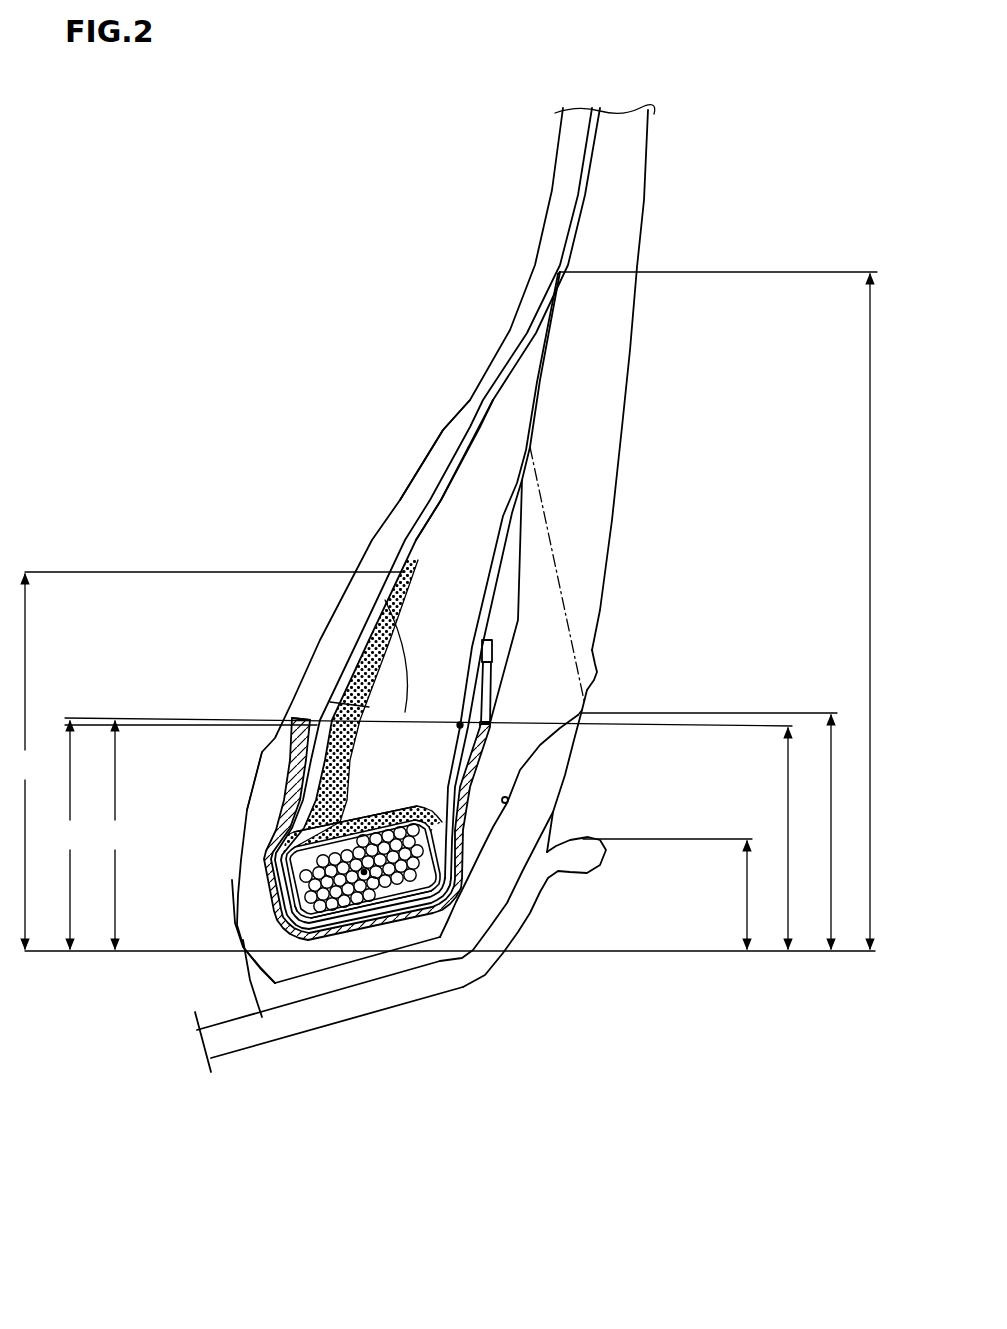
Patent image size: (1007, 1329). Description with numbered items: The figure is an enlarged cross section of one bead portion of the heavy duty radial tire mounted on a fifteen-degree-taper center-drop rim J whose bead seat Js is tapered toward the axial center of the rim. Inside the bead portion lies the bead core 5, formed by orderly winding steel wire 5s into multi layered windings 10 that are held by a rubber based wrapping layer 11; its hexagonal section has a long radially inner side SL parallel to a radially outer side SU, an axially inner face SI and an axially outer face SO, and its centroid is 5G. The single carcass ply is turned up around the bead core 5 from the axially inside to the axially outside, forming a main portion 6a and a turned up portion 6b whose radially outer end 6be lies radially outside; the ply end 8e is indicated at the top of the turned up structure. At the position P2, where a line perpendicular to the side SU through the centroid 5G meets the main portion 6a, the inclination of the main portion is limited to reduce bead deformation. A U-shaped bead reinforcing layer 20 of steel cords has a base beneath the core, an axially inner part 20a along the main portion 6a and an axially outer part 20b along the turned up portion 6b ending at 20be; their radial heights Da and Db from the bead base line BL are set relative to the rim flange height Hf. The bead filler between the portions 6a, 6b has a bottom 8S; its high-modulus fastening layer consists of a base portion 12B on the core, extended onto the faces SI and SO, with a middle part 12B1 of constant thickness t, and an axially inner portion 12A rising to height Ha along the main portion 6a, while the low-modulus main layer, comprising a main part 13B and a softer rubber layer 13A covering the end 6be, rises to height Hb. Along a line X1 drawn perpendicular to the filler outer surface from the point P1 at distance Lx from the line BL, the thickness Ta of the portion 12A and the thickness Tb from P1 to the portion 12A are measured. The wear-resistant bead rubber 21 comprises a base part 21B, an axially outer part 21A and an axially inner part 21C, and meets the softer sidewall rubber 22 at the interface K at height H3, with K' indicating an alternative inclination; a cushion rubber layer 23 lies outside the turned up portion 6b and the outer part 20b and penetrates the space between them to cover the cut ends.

The bead core 5 is at (418, 960).
The multi layered windings 10 is at (420, 872).
The rubber based wrapping layer 11 is at (445, 868).
The steel wire 5s is at (398, 905).
The centroid of the bead core cross sectional shape 5G is at (333, 915).
The radially inner side of the bead core SL is at (362, 925).
The carcass ply main portion 6a is at (488, 407).
The carcass ply turned up portion 6b is at (584, 552).
The radially outer end of the carcass ply 6be is at (496, 636).
The outer end of turned-up ply 8e is at (564, 270).
The bottom of the bead filler 8S is at (312, 822).
The axially inner portion of the fastening layer 12A is at (330, 740).
The base portion of the fastening layer 12B is at (510, 797).
The middle part of the base portion 12B1 is at (392, 776).
The thickness of the middle part t is at (369, 791).
The rubber layer of the main layer 13A is at (483, 590).
The main part of the main layer 13B is at (450, 527).
The bead reinforcing layer 20 is at (456, 810).
The axially inner part of the bead reinforcing layer 20a is at (268, 792).
The axially outer part of the bead reinforcing layer 20b is at (490, 740).
The radially outer end of the bead reinforcing layer 20be is at (494, 723).
The bead rubber 21 is at (389, 971).
The axially outer part of the bead rubber 21A is at (528, 892).
The base part of the bead rubber 21B is at (300, 988).
The axially inner part of the bead rubber 21C is at (257, 972).
The wheel rim J is at (389, 1002).
The bead seat Js is at (194, 1020).
The sidewall rubber 22 is at (612, 437).
The cushion rubber layer 23 is at (513, 557).
The interface between bead rubber and sidewall rubber K is at (570, 828).
The imaginary interface line K' is at (621, 576).
The point on the bead filler outer surface P1 is at (597, 672).
The specific position on the carcass main portion P2 is at (460, 725).
The measuring straight line X1 is at (510, 735).
The radially outer side of the bead core SU is at (290, 752).
The axially inner face of the bead core SI is at (262, 868).
The axially outer face of the bead core SO is at (520, 912).
The thickness of the axially inner portion Ta is at (333, 703).
The thickness from point P1 to the axially inner portion Tb is at (369, 706).
The bead base line BL is at (712, 954).
The radial height of the fastening layer outer end Ha is at (207, 760).
The radial height of the main layer Hb is at (723, 610).
The height of the bead rubber/sidewall rubber boundary H3 is at (715, 831).
The wheel rim flange height Hf is at (671, 894).
The radial height of the axially inner part Da is at (187, 835).
The radial height of the axially outer part Db is at (787, 838).
The radial distance to point P1 Lx is at (428, 833).